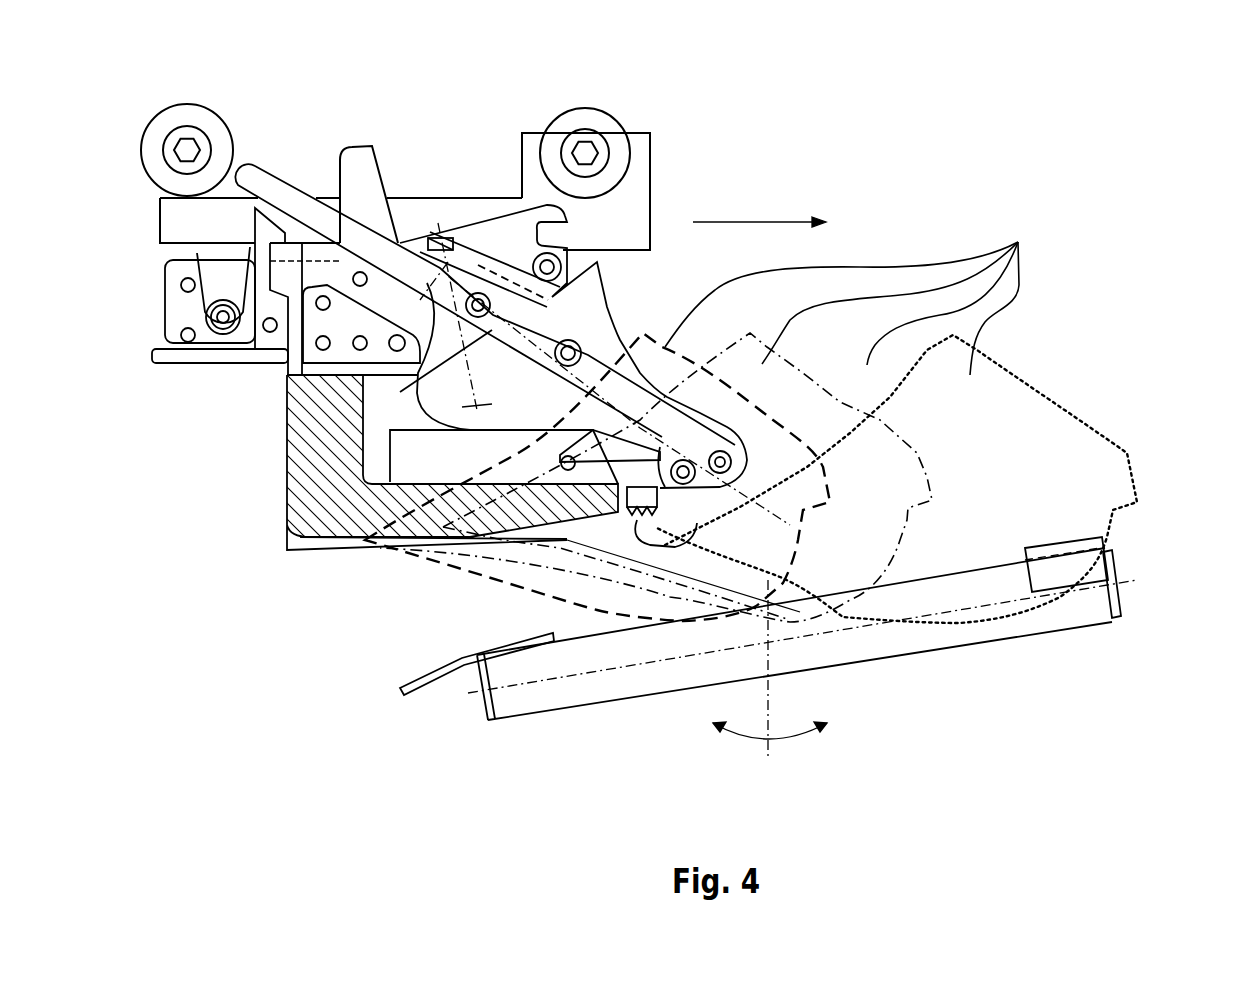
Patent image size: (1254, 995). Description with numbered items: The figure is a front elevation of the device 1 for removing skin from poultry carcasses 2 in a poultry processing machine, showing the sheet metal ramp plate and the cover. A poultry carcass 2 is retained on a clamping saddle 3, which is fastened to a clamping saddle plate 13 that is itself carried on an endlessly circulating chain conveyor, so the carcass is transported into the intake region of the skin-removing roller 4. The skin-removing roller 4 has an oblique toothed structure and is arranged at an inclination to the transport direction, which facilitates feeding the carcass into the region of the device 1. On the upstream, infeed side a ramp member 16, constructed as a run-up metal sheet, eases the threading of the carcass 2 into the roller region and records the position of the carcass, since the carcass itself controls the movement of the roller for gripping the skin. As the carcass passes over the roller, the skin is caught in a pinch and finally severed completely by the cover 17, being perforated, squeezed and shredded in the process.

The device for removing skin from poultry carcasses 1 is at (1192, 511).
The poultry carcass 2 is at (852, 292).
The clamping saddle 3 is at (303, 465).
The skin-removing roller 4 is at (1103, 613).
The clamping saddle plate 13 is at (645, 233).
The ramp member 16 is at (423, 678).
The cover 17 is at (1080, 562).